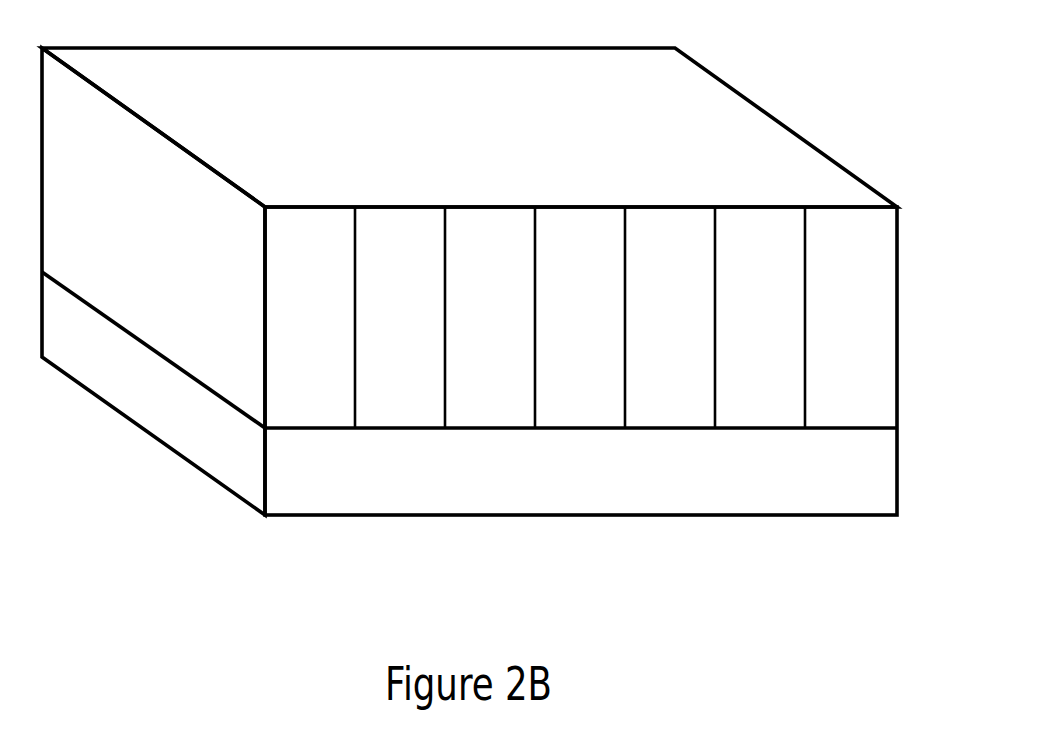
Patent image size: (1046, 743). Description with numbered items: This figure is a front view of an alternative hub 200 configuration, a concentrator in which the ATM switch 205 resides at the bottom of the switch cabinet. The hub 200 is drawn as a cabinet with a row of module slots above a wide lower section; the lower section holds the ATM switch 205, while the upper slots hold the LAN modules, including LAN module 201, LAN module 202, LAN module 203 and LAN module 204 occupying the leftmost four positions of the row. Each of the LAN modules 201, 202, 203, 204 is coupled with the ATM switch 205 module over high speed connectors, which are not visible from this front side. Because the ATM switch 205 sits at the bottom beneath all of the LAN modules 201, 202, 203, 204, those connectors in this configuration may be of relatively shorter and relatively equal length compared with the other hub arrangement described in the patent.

The hub 200 is at (800, 118).
The LAN module 201 is at (313, 240).
The LAN module 202 is at (413, 243).
The LAN module 203 is at (498, 243).
The LAN module 204 is at (585, 243).
The ATM switch 205 is at (581, 471).